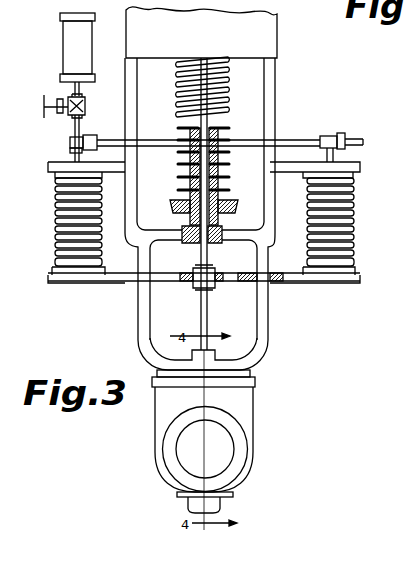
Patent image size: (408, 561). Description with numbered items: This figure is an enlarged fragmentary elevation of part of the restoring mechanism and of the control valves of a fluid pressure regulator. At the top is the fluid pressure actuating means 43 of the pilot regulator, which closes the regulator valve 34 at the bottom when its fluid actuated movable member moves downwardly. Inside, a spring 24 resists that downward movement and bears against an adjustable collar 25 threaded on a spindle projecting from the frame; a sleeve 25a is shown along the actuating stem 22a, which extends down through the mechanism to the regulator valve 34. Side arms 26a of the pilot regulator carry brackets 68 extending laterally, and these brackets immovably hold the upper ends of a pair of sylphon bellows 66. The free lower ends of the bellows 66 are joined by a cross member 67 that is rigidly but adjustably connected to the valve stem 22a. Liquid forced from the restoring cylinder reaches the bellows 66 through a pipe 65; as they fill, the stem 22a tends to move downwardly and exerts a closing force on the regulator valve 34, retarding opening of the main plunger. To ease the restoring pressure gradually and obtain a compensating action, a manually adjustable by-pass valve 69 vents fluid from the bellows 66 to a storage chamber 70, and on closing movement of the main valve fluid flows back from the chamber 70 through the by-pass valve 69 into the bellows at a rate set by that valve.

The fluid pressure actuating means 43 is at (270, 44).
The side arms 26a is at (133, 140).
The spring 24 is at (225, 112).
The sleeve 25a is at (227, 169).
The adjustable collar 25 is at (228, 223).
The actuating stem 22a is at (207, 313).
The cross member 67 is at (278, 283).
The brackets 68 is at (60, 163).
The pipe 65 is at (360, 140).
The sylphon bellows 66 is at (56, 220).
The storage chamber 70 is at (79, 52).
The by-pass valve 69 is at (79, 107).
The regulator valve 34 is at (238, 458).